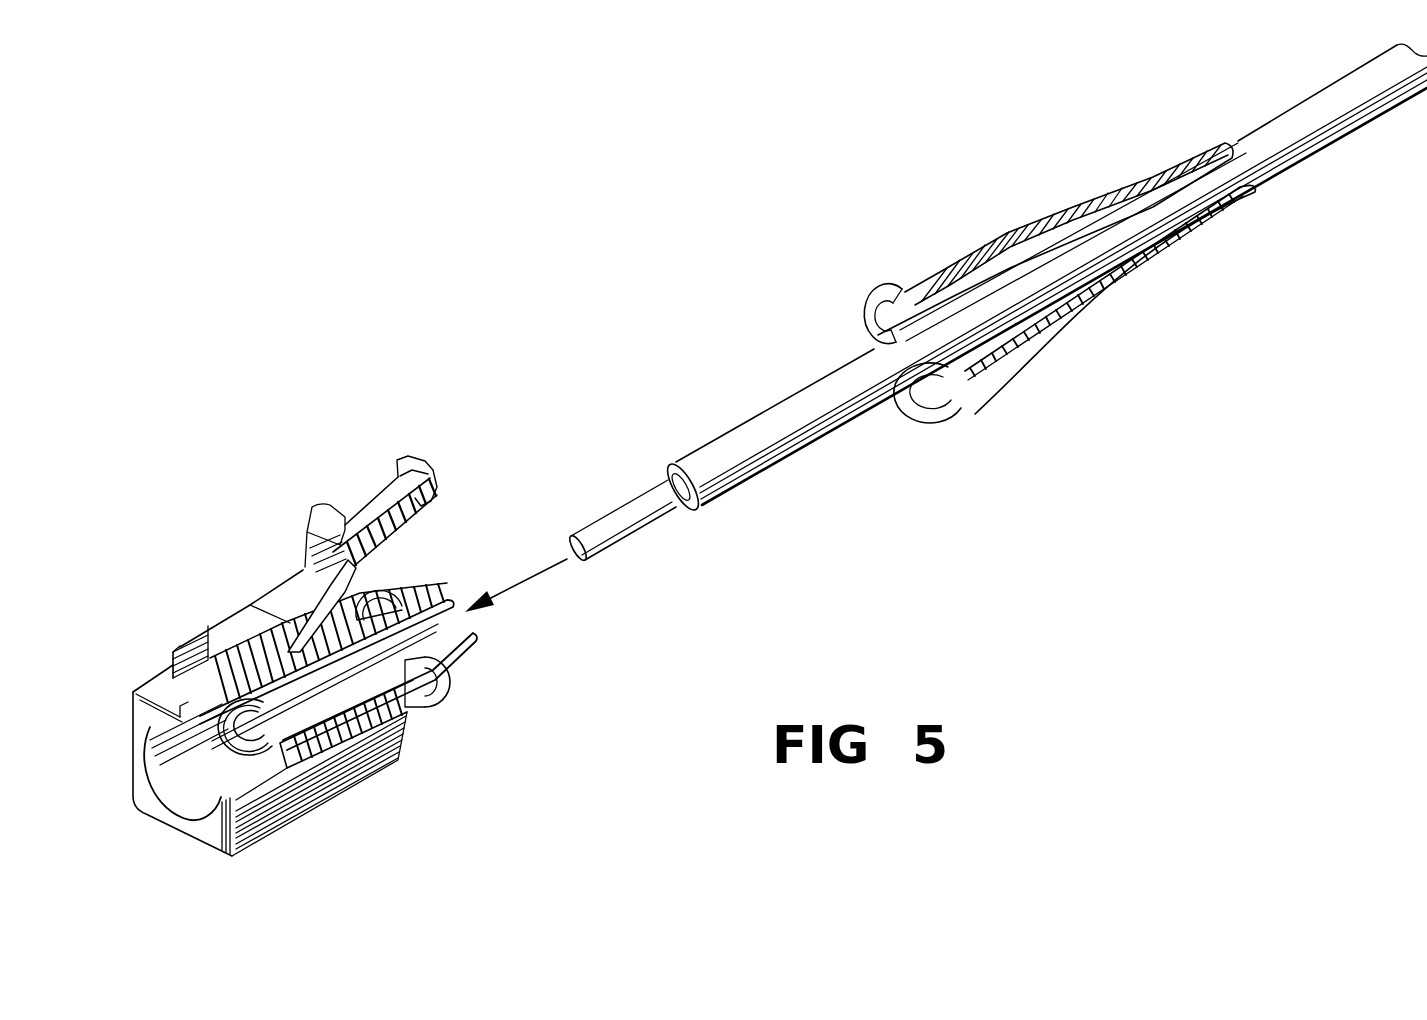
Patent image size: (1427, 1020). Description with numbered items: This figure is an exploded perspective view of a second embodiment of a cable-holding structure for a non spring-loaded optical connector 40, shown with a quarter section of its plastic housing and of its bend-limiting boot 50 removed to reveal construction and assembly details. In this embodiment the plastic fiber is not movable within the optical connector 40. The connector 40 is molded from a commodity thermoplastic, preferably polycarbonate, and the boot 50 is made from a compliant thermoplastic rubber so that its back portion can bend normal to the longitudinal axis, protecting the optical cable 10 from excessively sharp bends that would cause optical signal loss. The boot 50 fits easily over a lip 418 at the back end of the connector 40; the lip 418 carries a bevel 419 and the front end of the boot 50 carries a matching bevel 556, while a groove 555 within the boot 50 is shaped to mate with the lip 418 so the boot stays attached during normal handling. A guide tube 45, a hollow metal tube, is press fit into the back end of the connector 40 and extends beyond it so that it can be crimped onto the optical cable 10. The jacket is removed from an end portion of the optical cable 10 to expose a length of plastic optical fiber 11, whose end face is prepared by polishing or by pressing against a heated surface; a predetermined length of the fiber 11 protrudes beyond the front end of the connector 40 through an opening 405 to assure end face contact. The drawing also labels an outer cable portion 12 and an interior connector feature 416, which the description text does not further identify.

The optical cable 10 is at (992, 303).
The plastic optical fiber 11 is at (624, 512).
The outer tube 12 is at (738, 432).
The optical connector 40 is at (322, 668).
The guide tube 45 is at (446, 577).
The bend-limiting boot 50 is at (1022, 283).
The opening 405 is at (192, 807).
The inner cylindrical channel 416 is at (237, 735).
The lip 418 is at (428, 694).
The bevel 419 is at (455, 652).
The groove 555 is at (963, 272).
The bevel 556 is at (880, 325).